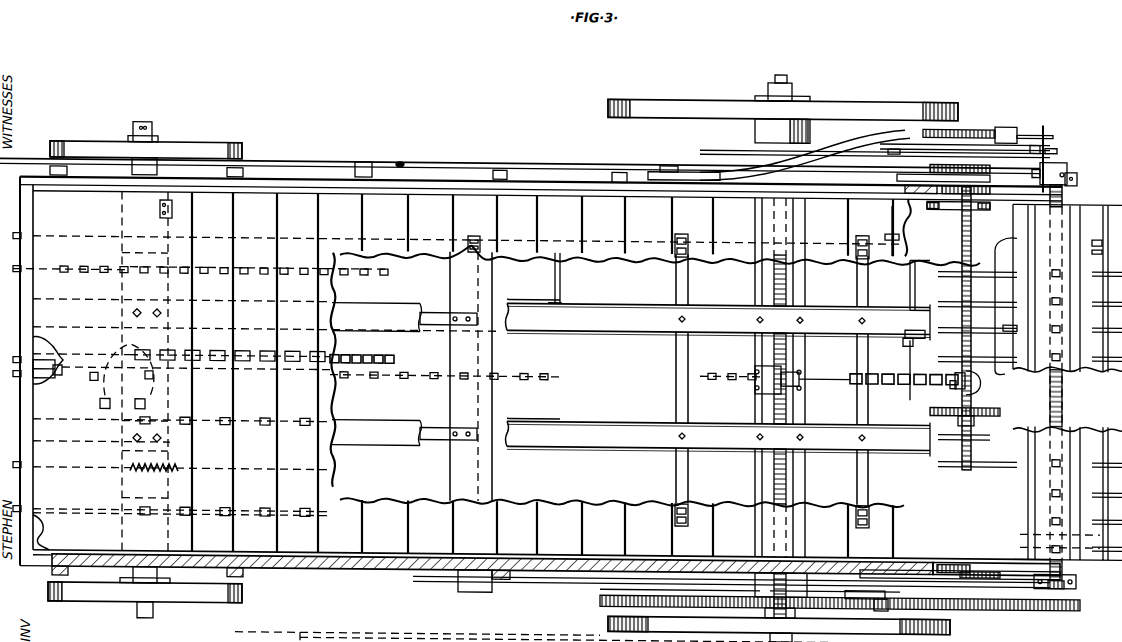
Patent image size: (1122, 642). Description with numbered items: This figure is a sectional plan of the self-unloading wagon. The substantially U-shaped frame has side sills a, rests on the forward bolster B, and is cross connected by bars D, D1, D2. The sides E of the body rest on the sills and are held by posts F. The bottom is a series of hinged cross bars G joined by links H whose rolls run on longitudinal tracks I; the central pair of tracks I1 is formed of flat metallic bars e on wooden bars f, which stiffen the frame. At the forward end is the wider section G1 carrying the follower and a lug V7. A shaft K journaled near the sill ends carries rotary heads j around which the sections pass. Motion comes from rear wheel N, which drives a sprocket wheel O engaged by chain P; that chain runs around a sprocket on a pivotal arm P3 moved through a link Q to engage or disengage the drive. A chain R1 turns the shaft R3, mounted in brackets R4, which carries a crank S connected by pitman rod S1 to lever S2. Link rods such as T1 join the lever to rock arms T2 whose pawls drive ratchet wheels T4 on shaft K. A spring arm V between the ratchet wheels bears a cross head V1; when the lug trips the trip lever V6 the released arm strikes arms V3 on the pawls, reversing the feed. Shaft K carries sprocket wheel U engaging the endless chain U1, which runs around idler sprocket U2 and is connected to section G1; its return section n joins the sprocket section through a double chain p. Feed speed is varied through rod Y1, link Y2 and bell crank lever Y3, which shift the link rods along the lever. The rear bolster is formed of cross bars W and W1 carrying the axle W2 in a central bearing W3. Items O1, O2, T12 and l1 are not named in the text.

The forward bolster B is at (122, 528).
The side sills a is at (438, 192).
The sides of the body E is at (428, 176).
The cross bar D is at (494, 269).
The cross bar D1 is at (690, 272).
The cross bar D2 is at (866, 275).
The central pair of tracks I1 is at (636, 331).
The flat metallic bars e is at (548, 328).
The rear wheel N is at (430, 309).
The longitudinally extending wooden bars f is at (614, 309).
The links H is at (226, 238).
The sprocket wheel O is at (118, 442).
The spring O1 is at (166, 473).
The bracket O2 is at (140, 381).
The idler sprocket U2 is at (60, 362).
The endless chain U1 is at (368, 354).
The return chain section n is at (514, 371).
The cross bar W is at (756, 457).
The shaft or axle W2 is at (774, 475).
The cross bar W1 is at (800, 471).
The central bearing W3 is at (760, 383).
The crank S is at (1066, 160).
The rod Y1 is at (326, 168).
The link Y2 is at (496, 166).
The bell crank lever Y3 is at (616, 167).
The cross bars of bottom G is at (258, 190).
The wider section G1 is at (607, 236).
The lug V7 is at (172, 199).
The posts F is at (68, 167).
The ratchet wheels T4 is at (960, 83).
The lever S2 is at (674, 171).
The pitman rod S1 is at (846, 138).
The link rod T1 is at (894, 110).
The spring T12 is at (986, 118).
The rock arms T2 is at (928, 174).
The spring arm V is at (902, 140).
The cross head V1 is at (1046, 120).
The arms V3 is at (1058, 126).
The trip lever V6 is at (912, 210).
The brackets R4 is at (1078, 168).
The shaft R3 is at (1064, 186).
The rotary heads j is at (994, 223).
The shaft K is at (960, 474).
The sprocket wheel U is at (990, 375).
The sprocket l1 is at (950, 388).
The tracks I is at (930, 232).
The link Q is at (560, 581).
The pivotal arm P3 is at (700, 586).
The sprocket chain P is at (814, 596).
The chain R1 is at (994, 597).
The double chain p is at (650, 632).